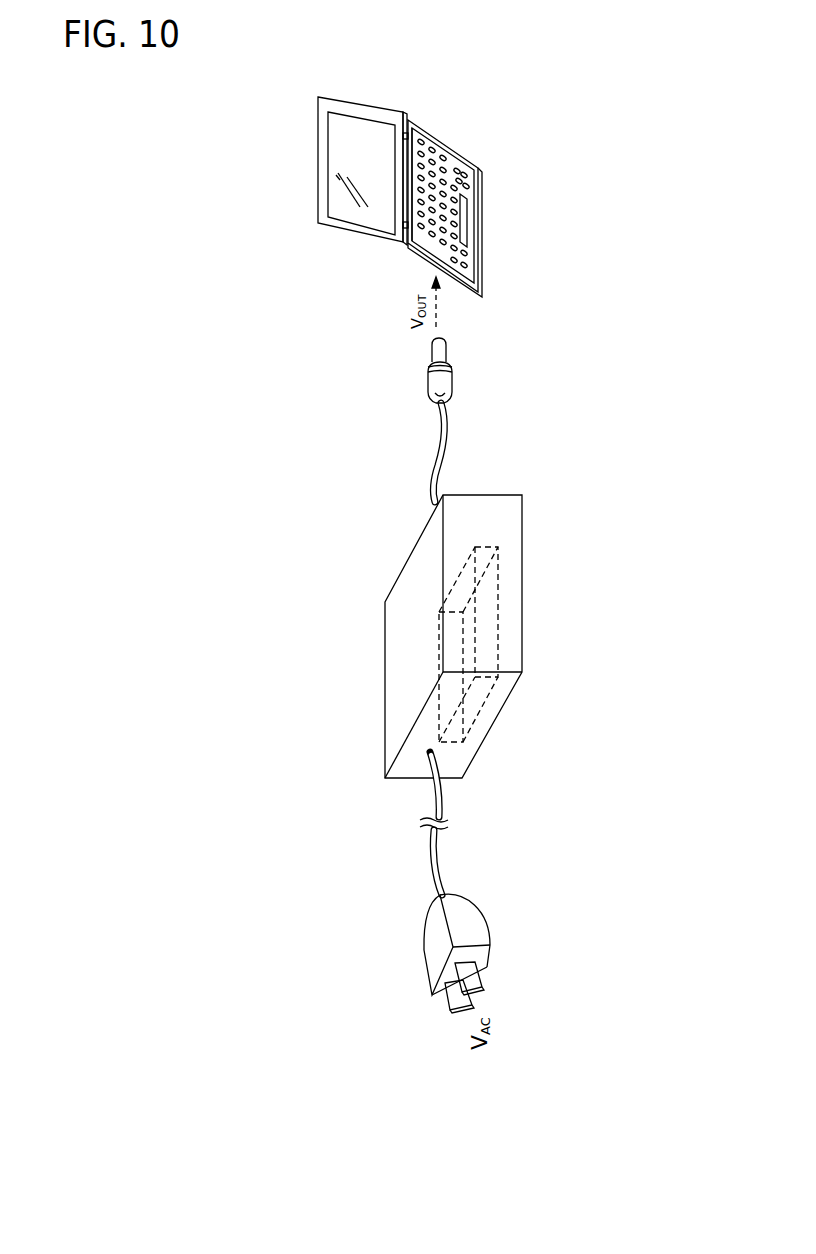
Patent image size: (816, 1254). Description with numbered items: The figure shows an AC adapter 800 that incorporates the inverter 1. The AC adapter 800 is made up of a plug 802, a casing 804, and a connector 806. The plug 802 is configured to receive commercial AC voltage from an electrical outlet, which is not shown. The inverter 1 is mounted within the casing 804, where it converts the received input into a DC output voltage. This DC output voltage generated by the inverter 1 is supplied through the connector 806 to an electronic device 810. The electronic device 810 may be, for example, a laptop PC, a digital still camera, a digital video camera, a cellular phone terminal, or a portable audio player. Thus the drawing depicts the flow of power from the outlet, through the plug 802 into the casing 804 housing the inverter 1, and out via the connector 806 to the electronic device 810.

The inverter 1 is at (487, 620).
The AC adapter 800 is at (672, 545).
The plug 802 is at (437, 945).
The casing 804 is at (384, 697).
The connector 806 is at (428, 383).
The electronic device 810 is at (318, 150).